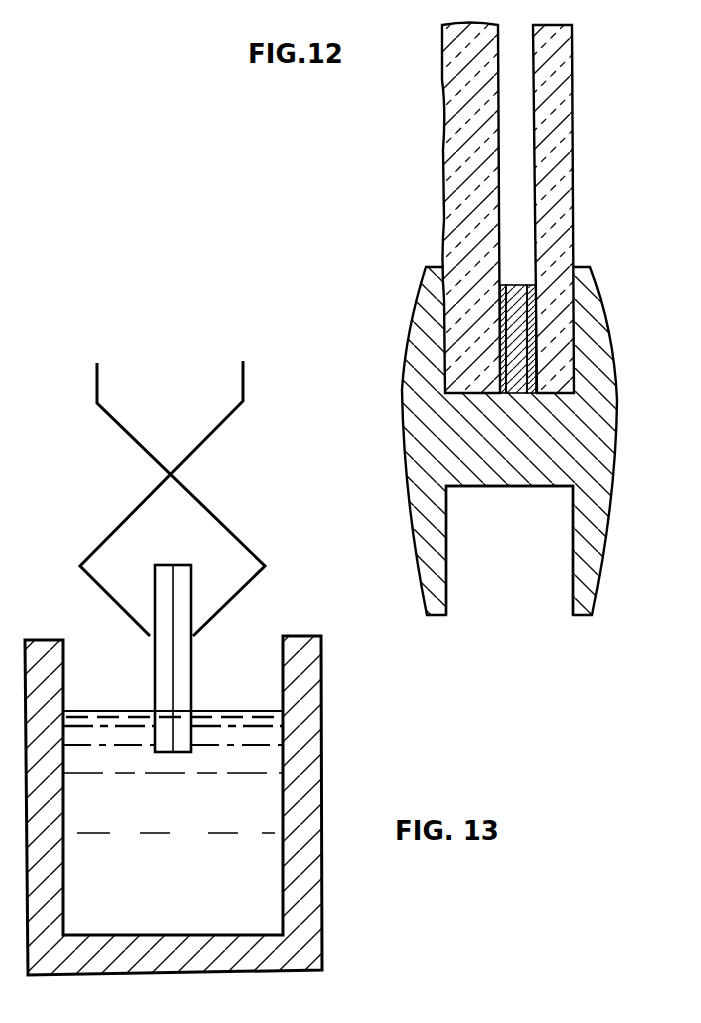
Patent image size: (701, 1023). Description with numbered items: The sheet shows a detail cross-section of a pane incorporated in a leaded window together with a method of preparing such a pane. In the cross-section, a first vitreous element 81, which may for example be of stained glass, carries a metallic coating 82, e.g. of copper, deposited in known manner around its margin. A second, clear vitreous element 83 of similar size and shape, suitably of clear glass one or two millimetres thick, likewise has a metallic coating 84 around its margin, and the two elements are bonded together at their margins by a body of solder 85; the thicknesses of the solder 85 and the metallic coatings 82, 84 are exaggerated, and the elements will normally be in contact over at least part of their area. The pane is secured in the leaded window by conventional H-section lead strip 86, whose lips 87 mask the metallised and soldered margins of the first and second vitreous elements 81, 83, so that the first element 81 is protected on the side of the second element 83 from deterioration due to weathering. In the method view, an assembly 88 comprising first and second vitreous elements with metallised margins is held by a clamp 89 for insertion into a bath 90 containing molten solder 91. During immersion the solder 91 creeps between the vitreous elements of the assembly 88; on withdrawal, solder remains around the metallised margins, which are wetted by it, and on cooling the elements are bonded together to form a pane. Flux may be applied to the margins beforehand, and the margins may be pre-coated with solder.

In FIG. 12, the first vitreous element 81 is at (447, 82).
In FIG. 12, the metallic coating 82 is at (500, 323).
In FIG. 12, the second vitreous element 83 is at (563, 92).
In FIG. 12, the metallic coating 84 is at (536, 322).
In FIG. 12, the body of solder 85 is at (515, 358).
In FIG. 12, the H-section lead strip 86 is at (520, 474).
In FIG. 12, the lips 87 is at (428, 283).
In FIG. 13, the assembly 88 is at (192, 685).
In FIG. 13, the clamp 89 is at (98, 377).
In FIG. 13, the bath 90 is at (312, 729).
In FIG. 13, the molten solder 91 is at (268, 802).